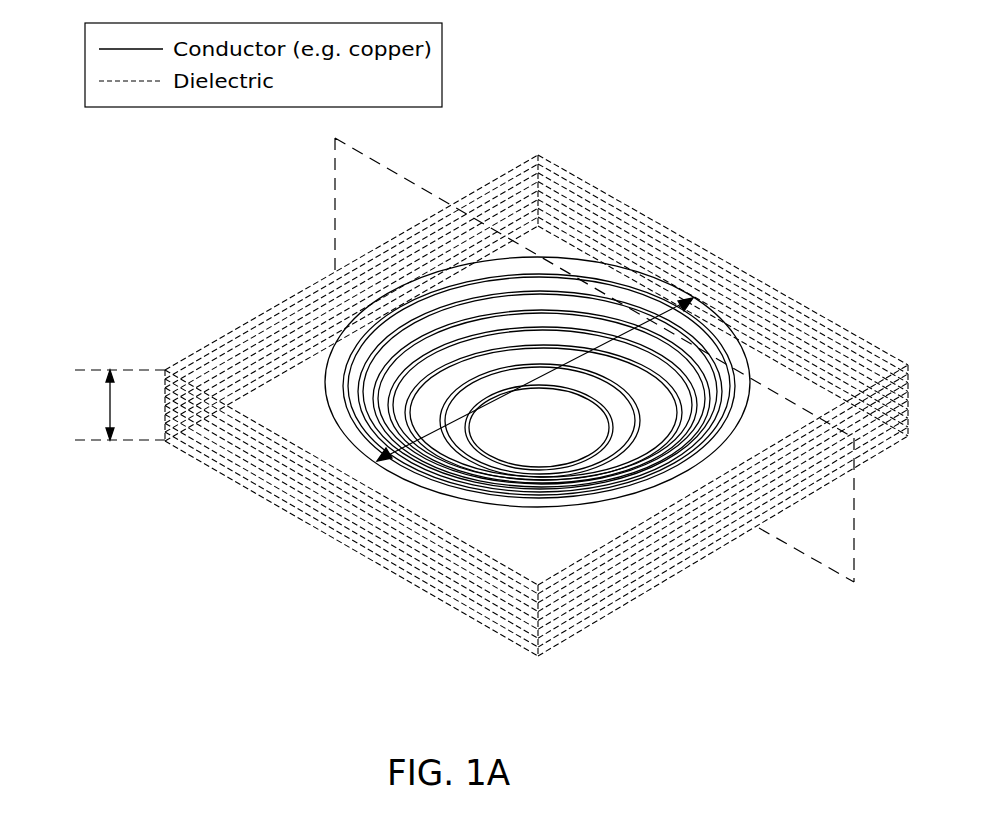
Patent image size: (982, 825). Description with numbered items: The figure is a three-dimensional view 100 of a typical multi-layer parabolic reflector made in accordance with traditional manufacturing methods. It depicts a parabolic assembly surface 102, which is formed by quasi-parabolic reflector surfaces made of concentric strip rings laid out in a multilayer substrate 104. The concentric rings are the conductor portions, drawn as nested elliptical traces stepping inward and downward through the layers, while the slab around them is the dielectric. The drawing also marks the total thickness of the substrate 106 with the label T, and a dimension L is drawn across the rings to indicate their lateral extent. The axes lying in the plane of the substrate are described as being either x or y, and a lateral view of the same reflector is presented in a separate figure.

The three-dimensional view 100 is at (461, 369).
The parabolic assembly surface 102 is at (325, 375).
The multilayer substrate 104 is at (387, 328).
The substrate 106 is at (85, 408).